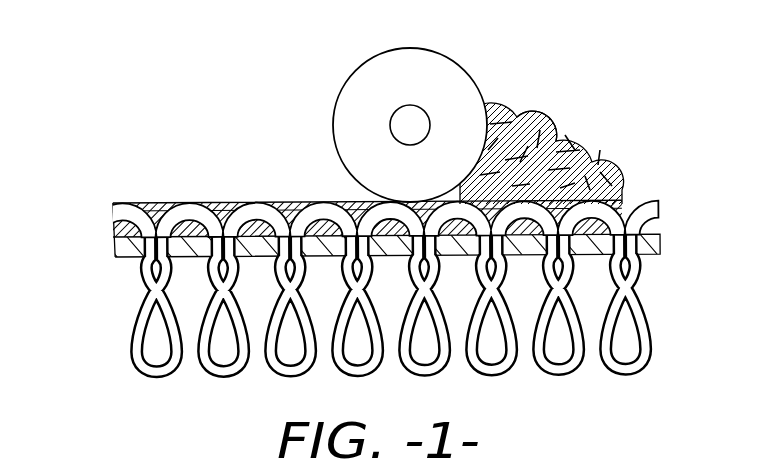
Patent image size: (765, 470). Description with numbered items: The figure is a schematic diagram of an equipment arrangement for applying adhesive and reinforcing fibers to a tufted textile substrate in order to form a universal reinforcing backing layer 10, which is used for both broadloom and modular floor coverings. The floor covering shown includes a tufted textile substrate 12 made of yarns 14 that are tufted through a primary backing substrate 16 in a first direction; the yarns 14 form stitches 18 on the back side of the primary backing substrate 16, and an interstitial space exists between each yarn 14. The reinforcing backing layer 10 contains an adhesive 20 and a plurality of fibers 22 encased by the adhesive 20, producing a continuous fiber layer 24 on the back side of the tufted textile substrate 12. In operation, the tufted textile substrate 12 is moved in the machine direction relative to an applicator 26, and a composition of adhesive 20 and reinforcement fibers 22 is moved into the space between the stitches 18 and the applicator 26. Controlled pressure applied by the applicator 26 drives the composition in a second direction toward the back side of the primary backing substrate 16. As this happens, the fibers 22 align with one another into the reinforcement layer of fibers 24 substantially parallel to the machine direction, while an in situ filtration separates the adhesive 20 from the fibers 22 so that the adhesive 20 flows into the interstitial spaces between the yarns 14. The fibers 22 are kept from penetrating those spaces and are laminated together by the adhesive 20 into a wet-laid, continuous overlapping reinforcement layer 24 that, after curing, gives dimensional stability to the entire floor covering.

The reinforcing backing layer 10 is at (92, 203).
The tufted textile substrate 12 is at (92, 240).
The yarns 14 is at (655, 350).
The primary backing substrate 16 is at (662, 241).
The stitches 18 is at (617, 190).
The adhesive 20 is at (547, 117).
The fibers 22 is at (582, 162).
The continuous fiber layer 24 is at (240, 203).
The applicator 26 is at (434, 51).